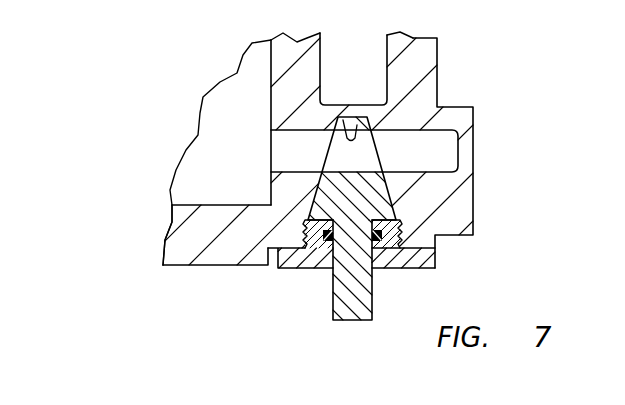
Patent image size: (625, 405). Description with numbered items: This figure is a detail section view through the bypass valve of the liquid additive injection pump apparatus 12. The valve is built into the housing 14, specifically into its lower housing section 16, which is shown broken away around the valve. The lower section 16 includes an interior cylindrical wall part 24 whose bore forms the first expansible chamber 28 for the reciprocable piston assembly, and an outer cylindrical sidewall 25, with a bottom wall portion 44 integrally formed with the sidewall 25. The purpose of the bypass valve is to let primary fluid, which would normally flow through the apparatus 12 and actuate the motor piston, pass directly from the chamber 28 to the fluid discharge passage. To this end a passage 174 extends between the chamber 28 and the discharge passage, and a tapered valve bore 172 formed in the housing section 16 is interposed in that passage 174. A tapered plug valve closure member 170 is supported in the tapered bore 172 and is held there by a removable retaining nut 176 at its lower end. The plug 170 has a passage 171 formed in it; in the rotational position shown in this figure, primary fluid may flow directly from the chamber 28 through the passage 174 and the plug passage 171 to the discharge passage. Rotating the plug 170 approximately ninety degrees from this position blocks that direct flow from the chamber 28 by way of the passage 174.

The liquid additive injection pump apparatus 12 is at (170, 142).
The housing 14 is at (205, 265).
The lower housing section 16 is at (437, 68).
The interior cylindrical wall part 24 is at (278, 40).
The outer cylindrical sidewall 25 is at (397, 40).
The first expansible chamber 28 is at (251, 130).
The bottom wall portion 44 is at (163, 252).
The tapered plug valve closure member 170 is at (393, 207).
The passage in closure plug 171 is at (343, 120).
The tapered valve bore 172 is at (306, 216).
The bypass passage 174 is at (430, 132).
The retaining nut 176 is at (312, 268).